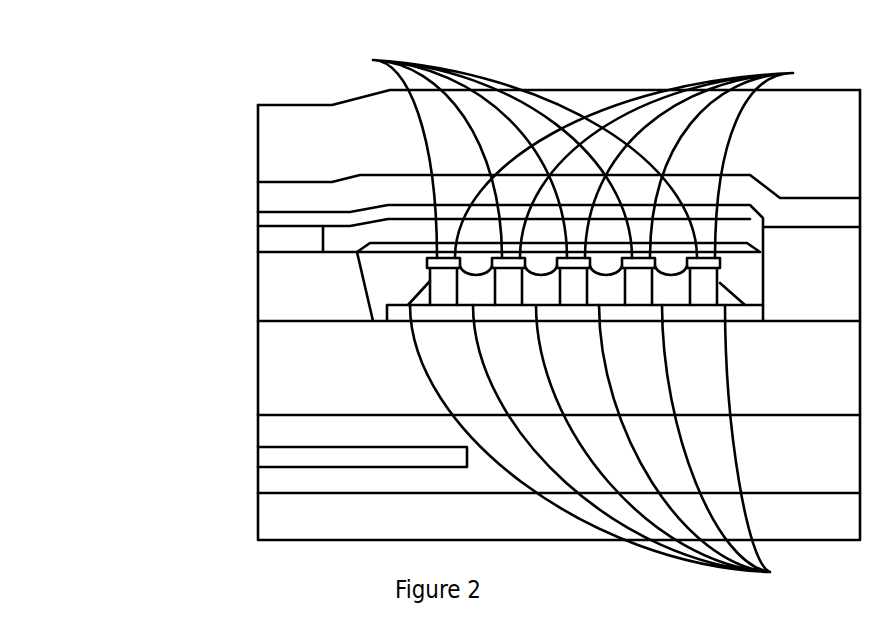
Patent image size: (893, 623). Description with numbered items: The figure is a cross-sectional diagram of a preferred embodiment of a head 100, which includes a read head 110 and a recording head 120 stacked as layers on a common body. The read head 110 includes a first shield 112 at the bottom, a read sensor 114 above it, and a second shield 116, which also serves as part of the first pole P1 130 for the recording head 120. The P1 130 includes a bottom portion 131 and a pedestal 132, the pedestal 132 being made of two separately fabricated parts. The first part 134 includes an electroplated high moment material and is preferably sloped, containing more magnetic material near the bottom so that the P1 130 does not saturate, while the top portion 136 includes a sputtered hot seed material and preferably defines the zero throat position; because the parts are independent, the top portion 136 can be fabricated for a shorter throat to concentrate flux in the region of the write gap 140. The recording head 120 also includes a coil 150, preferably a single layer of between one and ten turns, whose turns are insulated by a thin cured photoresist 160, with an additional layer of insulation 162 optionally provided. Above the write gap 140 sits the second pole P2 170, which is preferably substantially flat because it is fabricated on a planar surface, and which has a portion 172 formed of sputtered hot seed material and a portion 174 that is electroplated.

The head 100 is at (494, 42).
The read head 110 is at (444, 467).
The first shield 112 is at (257, 513).
The read sensor 114 is at (257, 457).
The second shield 116 is at (492, 388).
The bottom portion 131 is at (257, 398).
The recording head 120 is at (445, 232).
The first pole (P1) 130 is at (479, 290).
The pedestal 132 is at (504, 293).
The first part of pedestal 134 is at (257, 305).
The top portion of pedestal 136 is at (257, 244).
The write gap 140 is at (257, 217).
The coil 150 is at (793, 73).
The photoresist 160 is at (770, 572).
The additional layer of insulation 162 is at (521, 177).
The second pole (P2) 170 is at (485, 198).
The sputtered hot seed portion of P2 172 is at (257, 167).
The electroplated portion of P2 174 is at (332, 182).